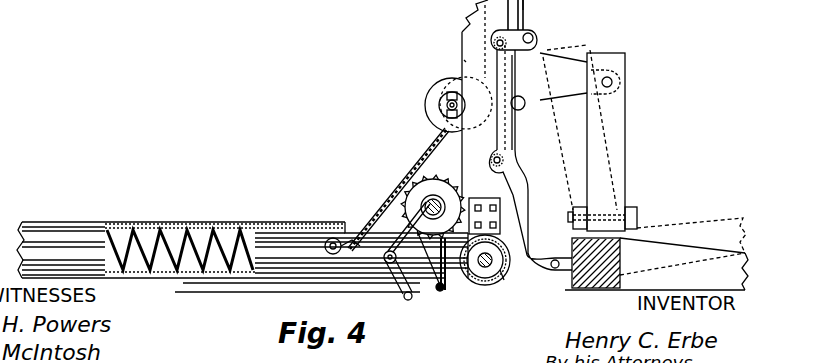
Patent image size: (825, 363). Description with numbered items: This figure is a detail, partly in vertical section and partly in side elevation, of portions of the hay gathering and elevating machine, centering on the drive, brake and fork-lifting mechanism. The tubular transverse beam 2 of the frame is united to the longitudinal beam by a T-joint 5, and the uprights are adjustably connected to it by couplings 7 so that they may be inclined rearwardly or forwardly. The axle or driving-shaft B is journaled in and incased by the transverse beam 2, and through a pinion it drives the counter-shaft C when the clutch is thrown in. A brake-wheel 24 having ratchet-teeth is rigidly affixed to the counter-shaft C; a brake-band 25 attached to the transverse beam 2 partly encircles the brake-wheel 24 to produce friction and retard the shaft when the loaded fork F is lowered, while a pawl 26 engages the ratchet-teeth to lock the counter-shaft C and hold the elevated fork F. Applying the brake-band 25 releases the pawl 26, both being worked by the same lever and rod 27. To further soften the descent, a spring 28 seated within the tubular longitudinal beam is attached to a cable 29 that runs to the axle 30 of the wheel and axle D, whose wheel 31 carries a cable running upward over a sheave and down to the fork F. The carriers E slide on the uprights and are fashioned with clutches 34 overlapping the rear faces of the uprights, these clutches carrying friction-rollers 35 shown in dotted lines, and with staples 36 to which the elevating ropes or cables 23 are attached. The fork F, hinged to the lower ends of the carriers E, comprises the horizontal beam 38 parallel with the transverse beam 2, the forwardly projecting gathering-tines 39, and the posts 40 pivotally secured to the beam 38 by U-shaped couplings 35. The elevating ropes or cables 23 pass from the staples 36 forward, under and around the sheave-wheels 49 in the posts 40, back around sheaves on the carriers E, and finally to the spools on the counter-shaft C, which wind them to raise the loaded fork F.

The transverse beam 2 is at (508, 281).
The T-joint 5 is at (442, 268).
The couplings 7 is at (500, 221).
The elevating ropes or cables 23 is at (570, 105).
The brake-wheel 24 is at (448, 180).
The brake-band 25 is at (398, 146).
The pawl 26 is at (397, 251).
The lever and rod 27 is at (297, 300).
The spring 28 is at (160, 224).
The cable 29 is at (301, 288).
The axle 30 is at (447, 106).
The wheel 31 is at (442, 80).
The clutches 34 is at (492, 170).
The friction-rollers 35 is at (492, 156).
The staples 36 is at (522, 107).
The horizontal beam 38 is at (594, 289).
The gathering-tines 39 is at (670, 137).
The posts 40 is at (602, 134).
The sheave-wheels 49 is at (619, 82).
The axle or driving-shaft B is at (485, 267).
The counter-shaft C is at (427, 202).
The wheel and axle D is at (425, 92).
The carriers E is at (516, 152).
The fork F is at (656, 247).